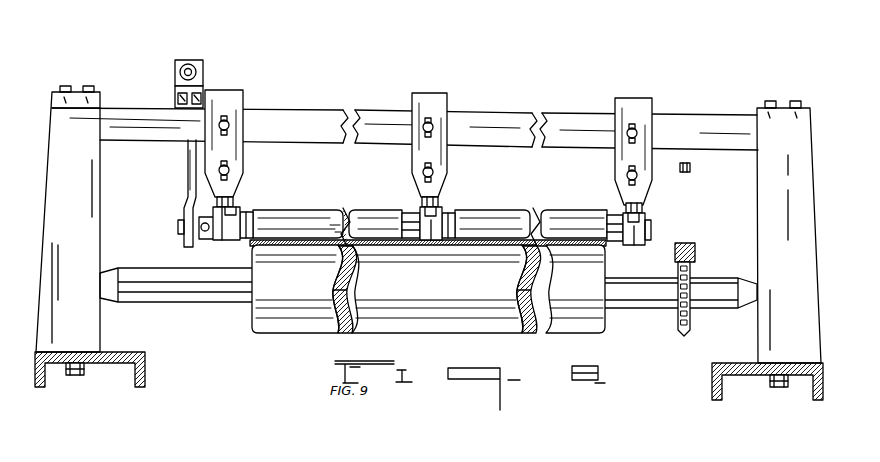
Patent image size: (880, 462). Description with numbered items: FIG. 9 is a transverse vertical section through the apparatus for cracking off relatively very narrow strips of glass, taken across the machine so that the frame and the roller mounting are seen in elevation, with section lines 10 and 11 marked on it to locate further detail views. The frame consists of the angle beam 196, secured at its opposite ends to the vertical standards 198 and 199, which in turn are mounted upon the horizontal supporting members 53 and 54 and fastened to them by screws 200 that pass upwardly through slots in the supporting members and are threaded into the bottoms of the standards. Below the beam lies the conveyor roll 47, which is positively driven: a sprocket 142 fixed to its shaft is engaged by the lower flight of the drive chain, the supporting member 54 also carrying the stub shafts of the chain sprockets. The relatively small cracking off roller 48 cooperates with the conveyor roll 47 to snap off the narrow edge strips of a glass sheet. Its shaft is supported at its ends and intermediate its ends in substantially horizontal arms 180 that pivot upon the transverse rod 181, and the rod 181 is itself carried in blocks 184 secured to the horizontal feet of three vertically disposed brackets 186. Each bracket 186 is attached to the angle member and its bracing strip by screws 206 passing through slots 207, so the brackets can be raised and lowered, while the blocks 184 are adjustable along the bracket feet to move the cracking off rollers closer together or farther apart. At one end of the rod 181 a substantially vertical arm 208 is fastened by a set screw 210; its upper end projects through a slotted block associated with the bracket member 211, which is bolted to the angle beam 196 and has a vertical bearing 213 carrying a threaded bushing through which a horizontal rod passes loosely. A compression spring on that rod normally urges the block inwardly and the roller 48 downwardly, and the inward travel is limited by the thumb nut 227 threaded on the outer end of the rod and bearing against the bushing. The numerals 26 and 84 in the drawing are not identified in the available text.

The section line 10- 10 is at (267, 50).
The section line 11- 11 is at (170, 35).
The roller 26 is at (428, 298).
The conveyor roll 47 is at (468, 308).
The cracking off roller 48 is at (314, 216).
The horizontal supporting member 53 is at (110, 358).
The horizontal supporting member 54 is at (740, 362).
The right clamp block 84 is at (636, 225).
The sprocket 142 is at (685, 321).
The horizontal arm 180 is at (621, 259).
The transverse rod 181 is at (501, 224).
The block 184 is at (433, 220).
The vertical bracket 186 is at (238, 156).
The angle beam 196 is at (323, 120).
The vertical standard 198 is at (86, 196).
The vertical standard 199 is at (763, 200).
The screw 200 is at (72, 371).
The screw 206 is at (235, 127).
The slot 207 is at (438, 188).
The vertical arm 208 is at (187, 182).
The set screw 210 is at (197, 217).
The bracket member 211 is at (176, 97).
The vertical bearing 213 is at (176, 80).
The thumb nut 227 is at (195, 64).